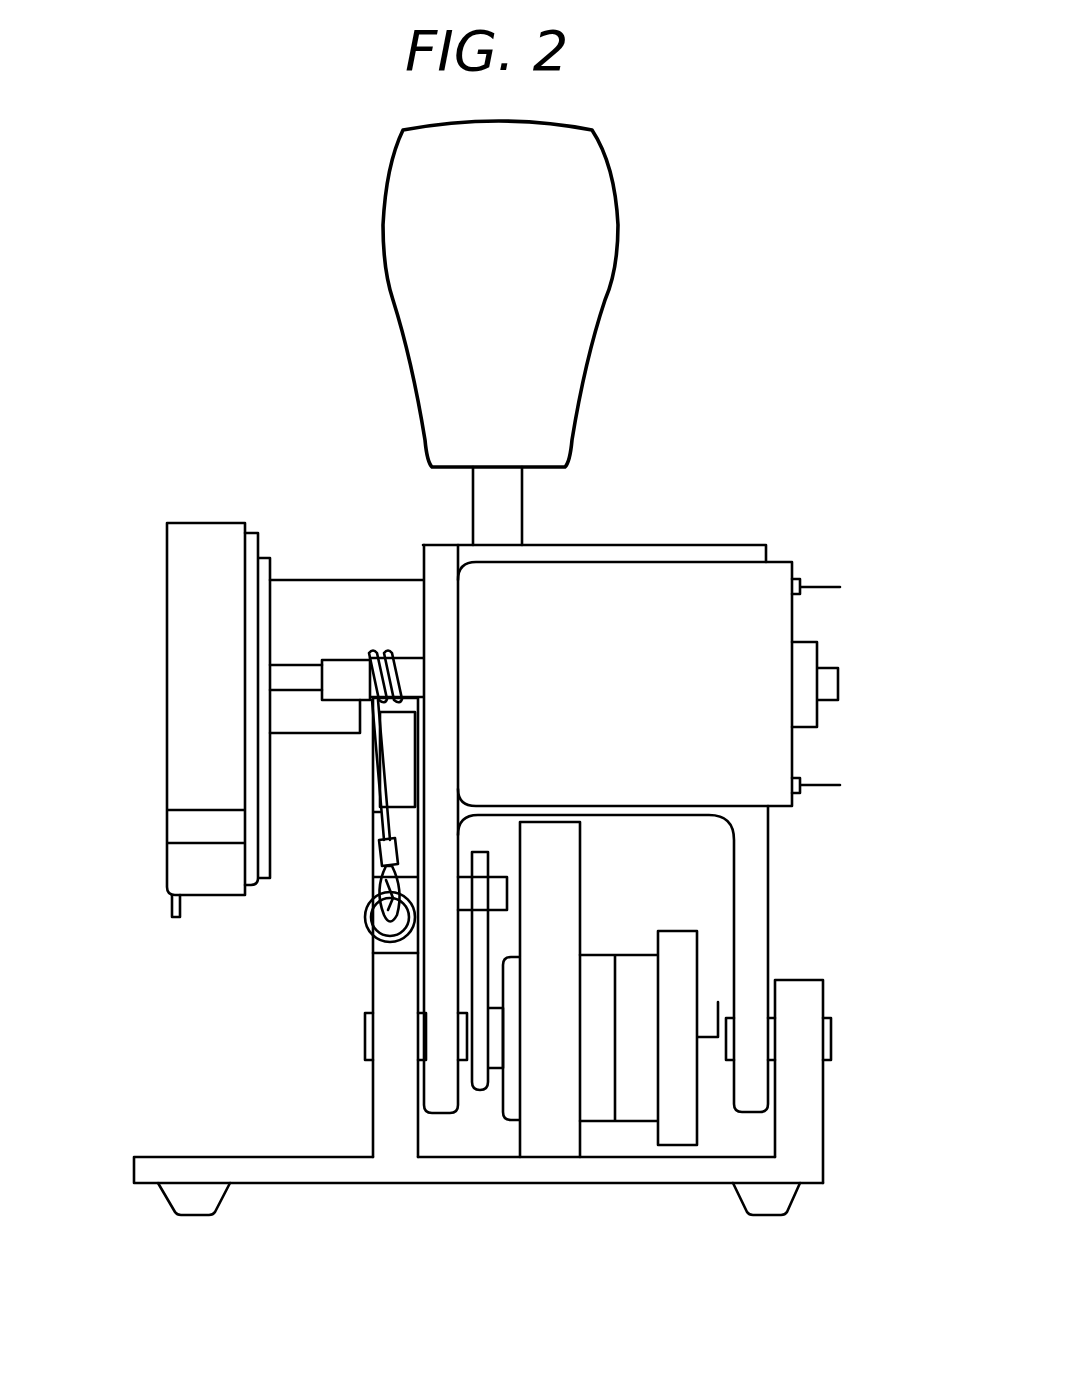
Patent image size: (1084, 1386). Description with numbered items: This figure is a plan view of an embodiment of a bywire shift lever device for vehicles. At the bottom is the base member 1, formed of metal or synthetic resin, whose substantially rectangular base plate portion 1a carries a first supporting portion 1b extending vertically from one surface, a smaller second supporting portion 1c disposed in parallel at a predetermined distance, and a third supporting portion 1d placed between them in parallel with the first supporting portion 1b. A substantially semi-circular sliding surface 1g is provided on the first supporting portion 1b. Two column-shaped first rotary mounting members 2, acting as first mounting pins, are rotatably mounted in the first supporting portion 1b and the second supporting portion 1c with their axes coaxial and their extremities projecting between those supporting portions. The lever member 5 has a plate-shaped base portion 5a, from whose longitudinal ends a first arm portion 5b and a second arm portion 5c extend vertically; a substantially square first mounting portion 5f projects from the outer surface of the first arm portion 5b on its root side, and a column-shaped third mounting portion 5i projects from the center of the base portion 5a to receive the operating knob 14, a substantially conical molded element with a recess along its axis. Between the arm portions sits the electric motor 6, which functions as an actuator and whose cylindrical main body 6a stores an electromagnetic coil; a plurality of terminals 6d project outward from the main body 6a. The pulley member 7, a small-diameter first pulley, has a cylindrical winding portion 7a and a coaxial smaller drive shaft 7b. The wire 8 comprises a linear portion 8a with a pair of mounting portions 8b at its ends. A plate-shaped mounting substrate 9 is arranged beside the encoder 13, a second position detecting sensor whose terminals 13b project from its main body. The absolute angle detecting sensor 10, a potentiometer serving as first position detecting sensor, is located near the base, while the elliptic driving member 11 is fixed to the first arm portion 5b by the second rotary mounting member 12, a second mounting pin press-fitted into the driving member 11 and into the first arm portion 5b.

The base member 1 is at (519, 1125).
The base plate portion 1a is at (495, 1168).
The first supporting portion 1b is at (370, 1114).
The second supporting portion 1c is at (826, 1098).
The third supporting portion 1d is at (518, 1133).
The sliding surface 1g is at (393, 750).
The first rotary mounting member 2 is at (364, 1036).
The lever member 5 is at (566, 790).
The base portion 5a is at (653, 544).
The first arm portion 5b is at (427, 972).
The second arm portion 5c is at (752, 915).
The first mounting portion 5f is at (308, 593).
The third mounting portion 5i is at (522, 515).
The electric motor 6 is at (792, 627).
The main body 6a is at (762, 782).
The terminals 6d is at (830, 587).
The pulley member 7 is at (346, 600).
The winding portion 7a is at (350, 672).
The drive shaft 7b is at (295, 673).
The wire 8 is at (377, 830).
The linear portion 8a is at (377, 788).
The mounting portions 8b is at (373, 880).
The mounting substrate 9 is at (278, 560).
The absolute angle detecting sensor 10 is at (625, 1124).
The driving member 11 is at (483, 932).
The second rotary mounting member 12 is at (500, 888).
The encoder 13 is at (163, 645).
The terminals 13b is at (168, 903).
The operating knob 14 is at (645, 242).